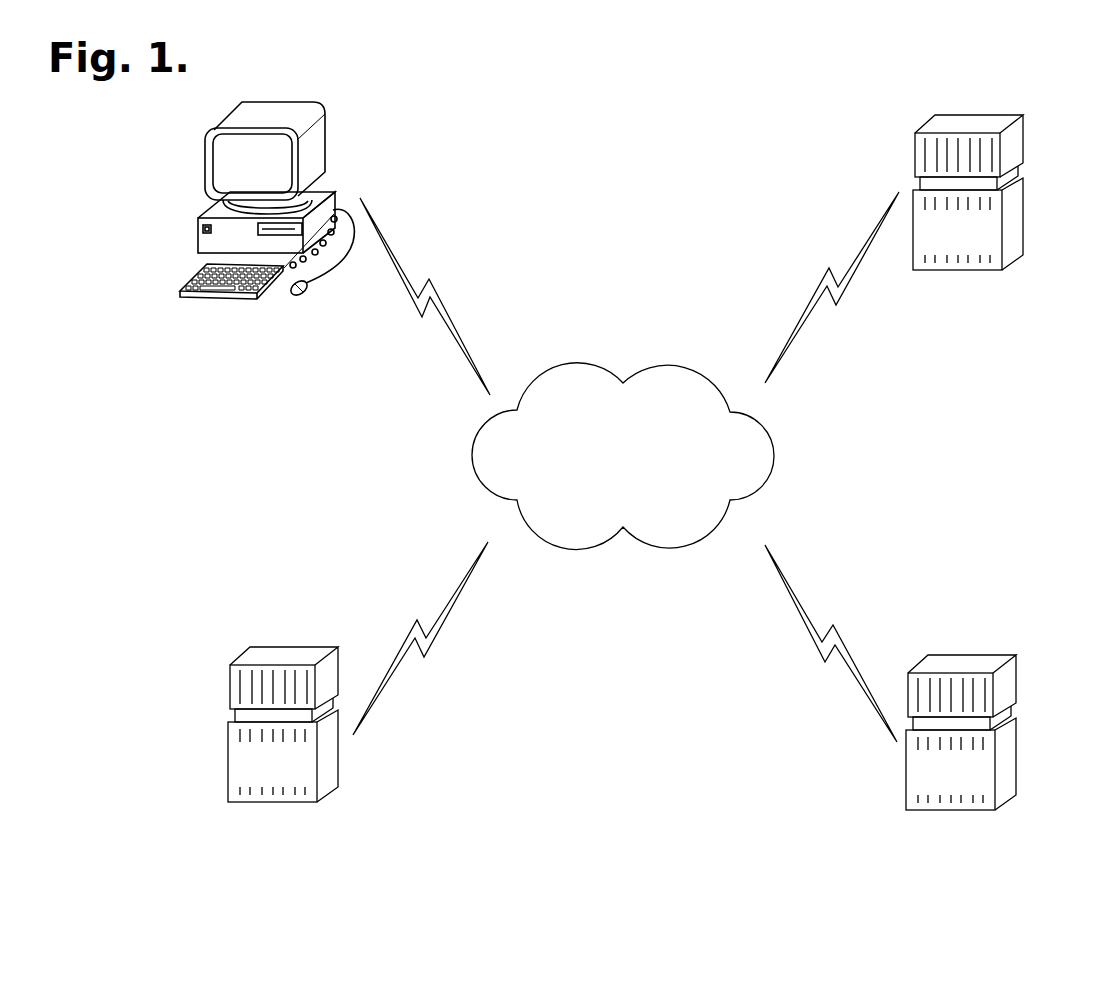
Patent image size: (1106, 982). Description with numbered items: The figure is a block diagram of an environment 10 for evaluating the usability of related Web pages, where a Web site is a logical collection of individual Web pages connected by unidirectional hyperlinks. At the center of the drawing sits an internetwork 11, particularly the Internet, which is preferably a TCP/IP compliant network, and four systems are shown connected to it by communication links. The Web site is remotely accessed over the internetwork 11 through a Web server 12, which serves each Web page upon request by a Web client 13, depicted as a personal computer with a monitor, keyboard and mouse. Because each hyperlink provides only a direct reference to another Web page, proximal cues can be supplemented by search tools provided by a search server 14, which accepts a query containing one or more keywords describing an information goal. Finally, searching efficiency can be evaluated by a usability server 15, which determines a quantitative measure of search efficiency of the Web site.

The environment 10 is at (138, 131).
The internetwork 11 is at (772, 457).
The Web server 12 is at (1023, 145).
The Web client 13 is at (205, 172).
The search server 14 is at (230, 686).
The usability server 15 is at (1017, 680).